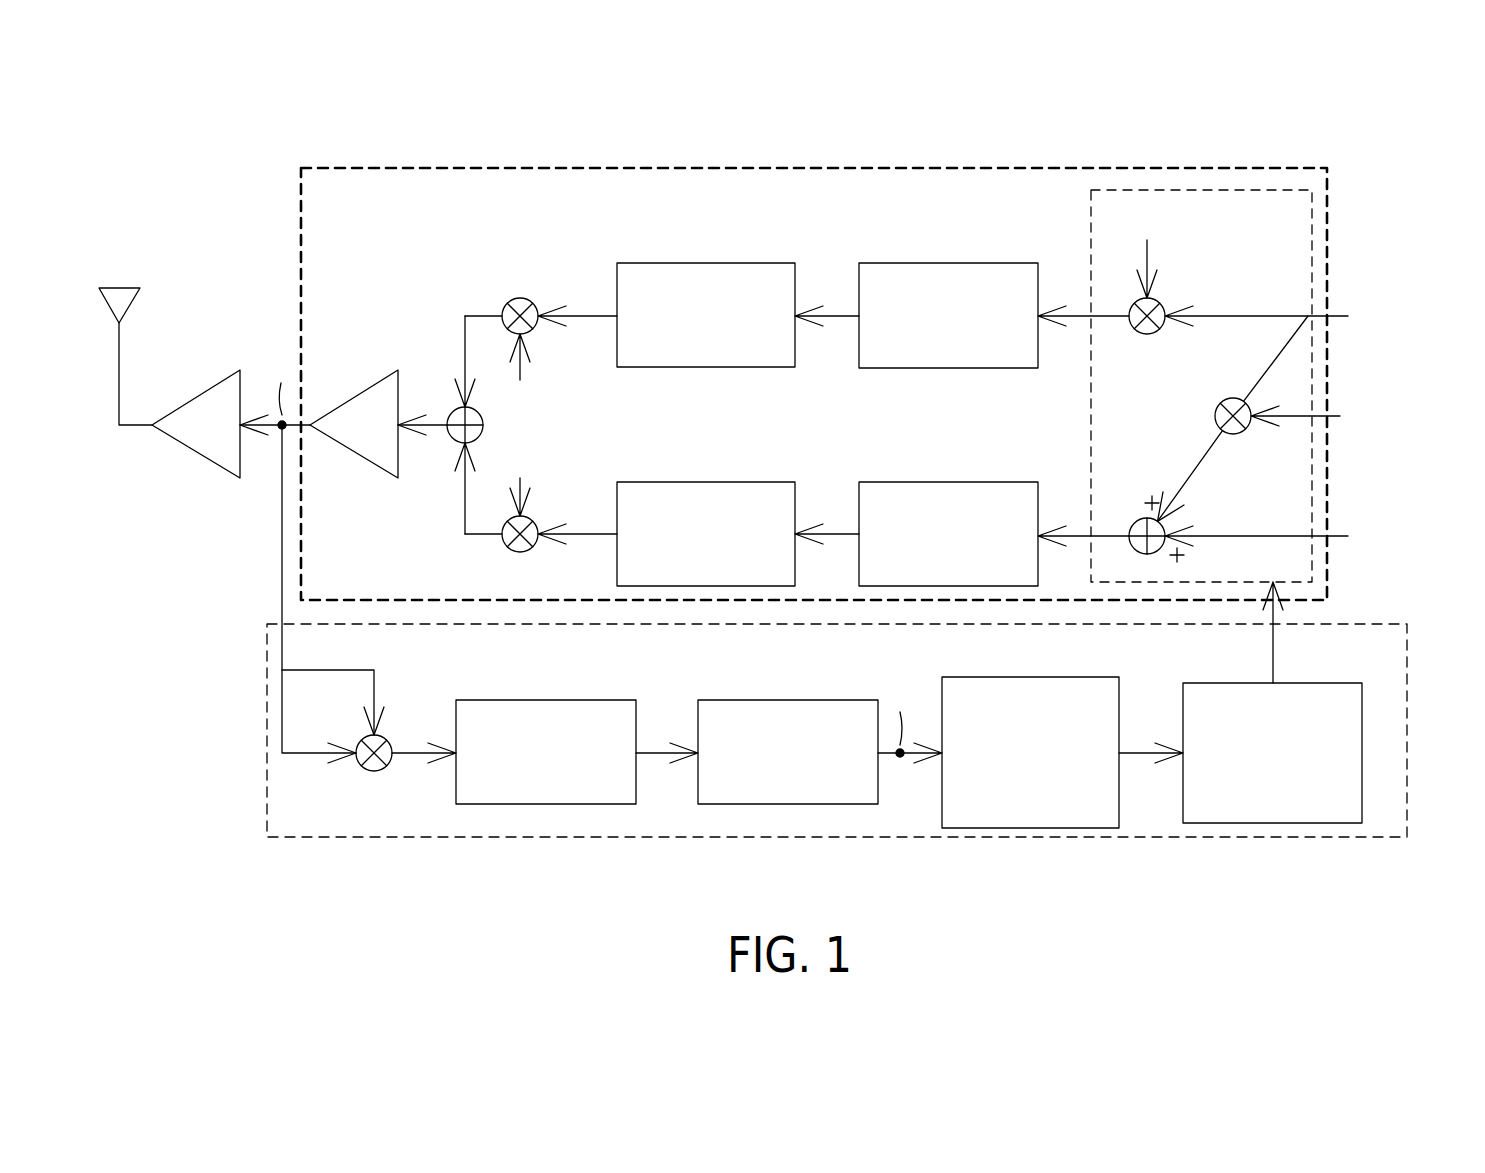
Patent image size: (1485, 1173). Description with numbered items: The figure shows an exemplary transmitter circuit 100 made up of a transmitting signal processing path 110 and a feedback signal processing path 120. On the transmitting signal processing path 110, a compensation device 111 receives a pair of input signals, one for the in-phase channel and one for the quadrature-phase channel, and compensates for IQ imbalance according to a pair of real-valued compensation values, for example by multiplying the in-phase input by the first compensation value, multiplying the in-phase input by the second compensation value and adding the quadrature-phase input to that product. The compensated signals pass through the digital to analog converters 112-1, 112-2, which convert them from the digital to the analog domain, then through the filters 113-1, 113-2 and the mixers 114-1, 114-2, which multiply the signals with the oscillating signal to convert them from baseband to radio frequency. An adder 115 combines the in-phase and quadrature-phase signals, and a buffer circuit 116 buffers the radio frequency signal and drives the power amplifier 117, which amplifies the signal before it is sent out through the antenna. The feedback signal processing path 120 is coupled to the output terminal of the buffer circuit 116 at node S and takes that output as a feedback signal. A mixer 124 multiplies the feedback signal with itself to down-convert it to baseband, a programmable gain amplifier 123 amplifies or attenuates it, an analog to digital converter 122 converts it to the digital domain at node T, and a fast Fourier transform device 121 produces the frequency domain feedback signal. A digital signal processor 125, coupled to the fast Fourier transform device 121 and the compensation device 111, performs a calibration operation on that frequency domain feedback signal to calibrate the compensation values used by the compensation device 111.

The transmitter circuit 100 is at (250, 162).
The transmitting signal processing path 110 is at (839, 165).
The compensation device 111 is at (1201, 188).
The digital to analog converter 112-1 is at (947, 262).
The digital to analog converter 112-2 is at (947, 480).
The filter 113-1 is at (706, 262).
The filter 113-2 is at (707, 480).
The mixer 114-1 is at (520, 296).
The mixer 114-2 is at (518, 554).
The adder 115 is at (455, 410).
The buffer circuit 116 is at (390, 438).
The power amplifier 117 is at (230, 438).
The feedback signal processing path 120 is at (267, 720).
The fast Fourier transform device 121 is at (1000, 677).
The analog to digital converter 122 is at (777, 698).
The programmable gain amplifier 123 is at (546, 698).
The mixer 124 is at (390, 739).
The digital signal processor 125 is at (1300, 683).